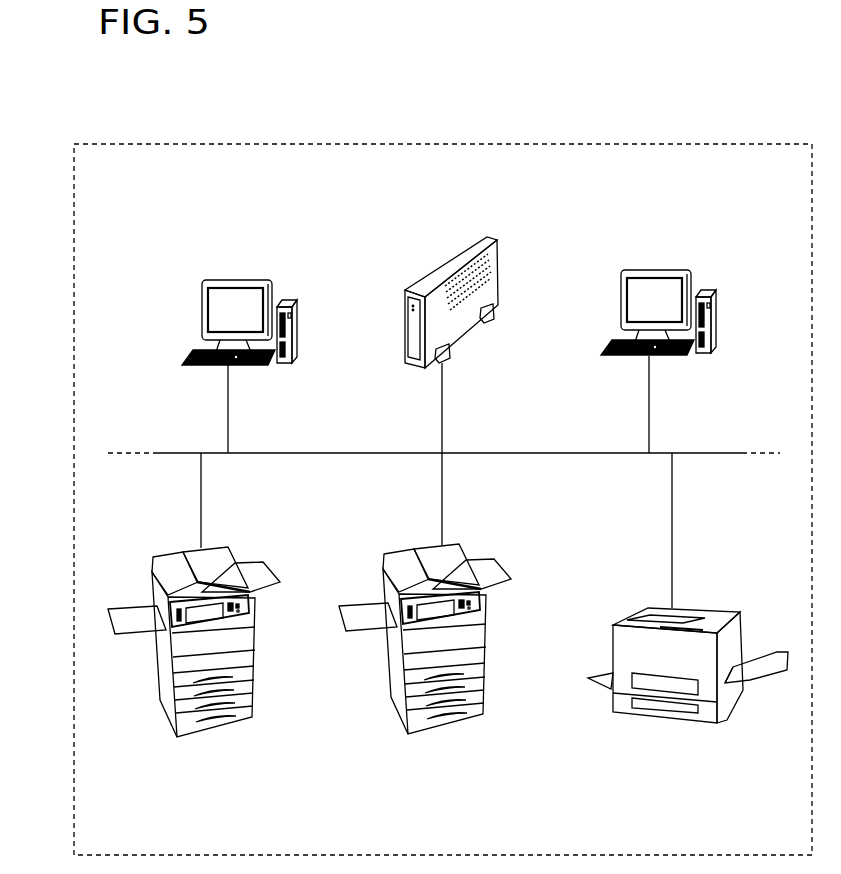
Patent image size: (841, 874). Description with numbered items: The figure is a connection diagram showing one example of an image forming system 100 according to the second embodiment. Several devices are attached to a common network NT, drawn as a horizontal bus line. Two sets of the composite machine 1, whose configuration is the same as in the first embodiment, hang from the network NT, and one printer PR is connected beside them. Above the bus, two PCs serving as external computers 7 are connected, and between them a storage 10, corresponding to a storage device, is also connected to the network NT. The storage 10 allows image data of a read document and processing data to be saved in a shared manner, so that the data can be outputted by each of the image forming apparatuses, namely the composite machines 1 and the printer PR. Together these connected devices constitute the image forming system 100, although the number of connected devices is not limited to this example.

The image forming system 100 is at (199, 144).
The network NT is at (166, 427).
The external computer 7 is at (212, 280).
The storage 10 is at (483, 243).
The composite machine 1 is at (247, 725).
The printer PR is at (720, 725).